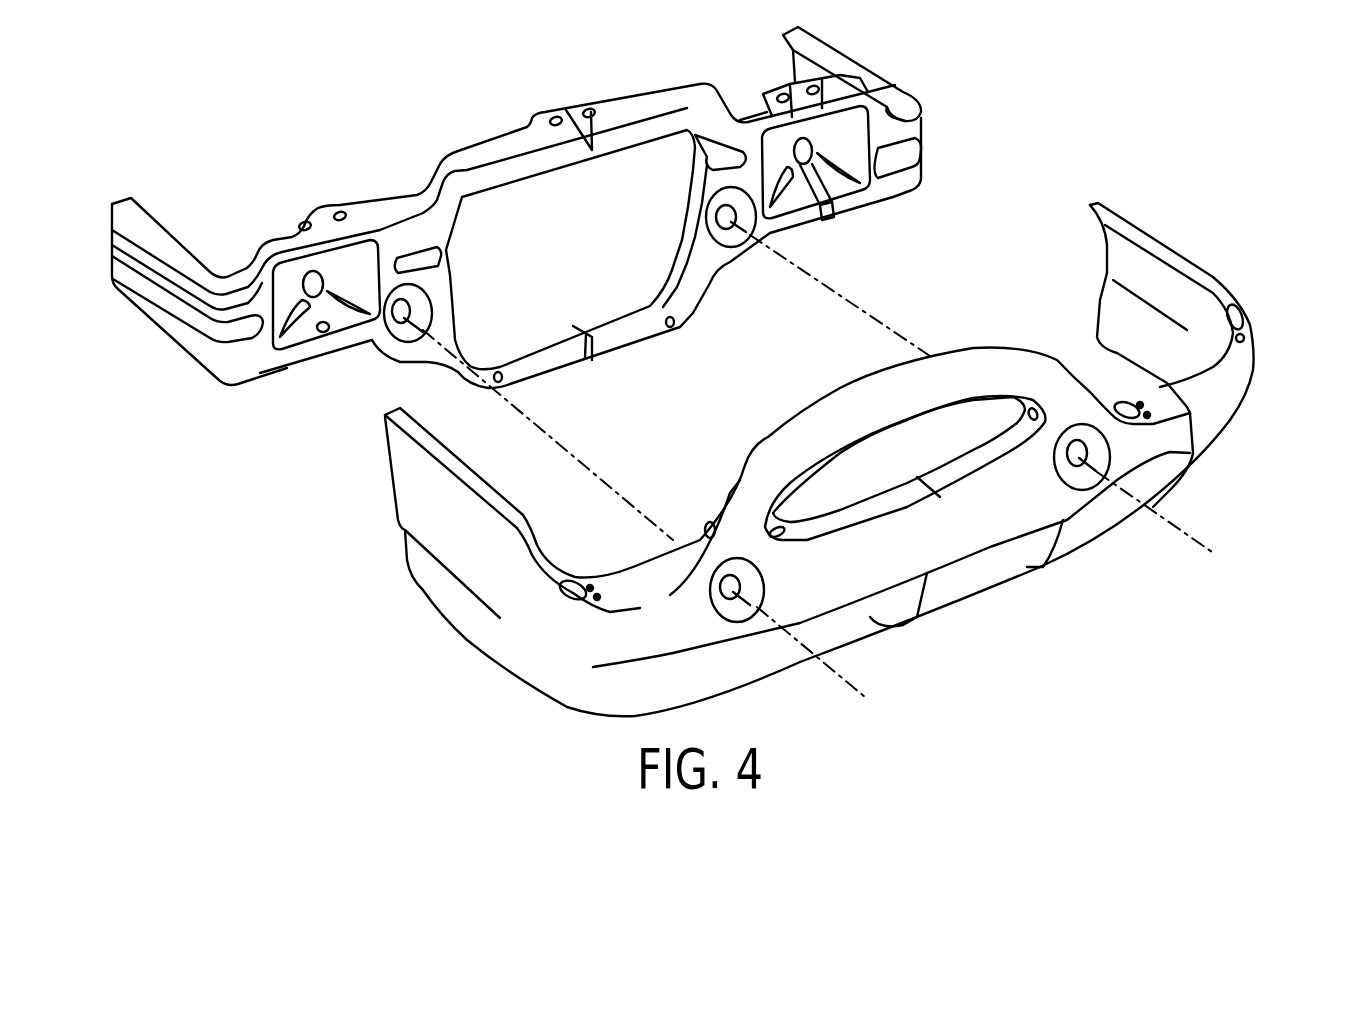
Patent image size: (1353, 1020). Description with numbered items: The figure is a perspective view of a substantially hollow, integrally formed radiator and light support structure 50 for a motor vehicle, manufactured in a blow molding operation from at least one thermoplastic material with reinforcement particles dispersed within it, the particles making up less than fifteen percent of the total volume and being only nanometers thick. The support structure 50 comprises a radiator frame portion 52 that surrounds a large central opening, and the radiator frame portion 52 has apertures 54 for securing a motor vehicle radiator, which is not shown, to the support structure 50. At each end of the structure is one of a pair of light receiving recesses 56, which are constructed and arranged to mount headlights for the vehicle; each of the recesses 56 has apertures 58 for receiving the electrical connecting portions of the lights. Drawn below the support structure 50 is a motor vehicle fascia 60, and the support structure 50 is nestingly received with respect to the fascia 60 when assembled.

The radiator and light support structure 50 is at (925, 99).
The radiator frame portion 52 is at (617, 130).
The apertures 54 is at (547, 116).
The light receiving recesses 56 is at (307, 327).
The apertures 58 is at (313, 272).
The motor vehicle fascia 60 is at (1248, 312).